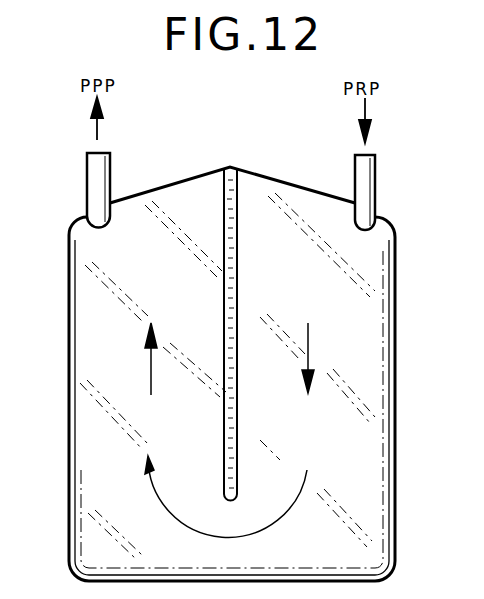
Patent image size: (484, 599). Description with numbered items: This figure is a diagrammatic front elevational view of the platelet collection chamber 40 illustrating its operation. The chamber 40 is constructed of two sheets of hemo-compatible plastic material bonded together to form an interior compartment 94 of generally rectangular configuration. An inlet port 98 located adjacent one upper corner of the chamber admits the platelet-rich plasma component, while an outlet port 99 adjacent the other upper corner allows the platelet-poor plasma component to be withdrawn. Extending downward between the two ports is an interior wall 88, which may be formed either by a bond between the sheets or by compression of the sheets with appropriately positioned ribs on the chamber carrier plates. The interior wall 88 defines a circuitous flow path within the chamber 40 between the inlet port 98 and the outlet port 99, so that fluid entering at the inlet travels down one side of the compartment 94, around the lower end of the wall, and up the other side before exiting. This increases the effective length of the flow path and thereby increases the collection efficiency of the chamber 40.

The platelet collection chamber 40 is at (390, 403).
The interior wall 88 is at (232, 323).
The interior compartment 94 is at (248, 533).
The inlet port 98 is at (367, 193).
The outlet port 99 is at (98, 188).